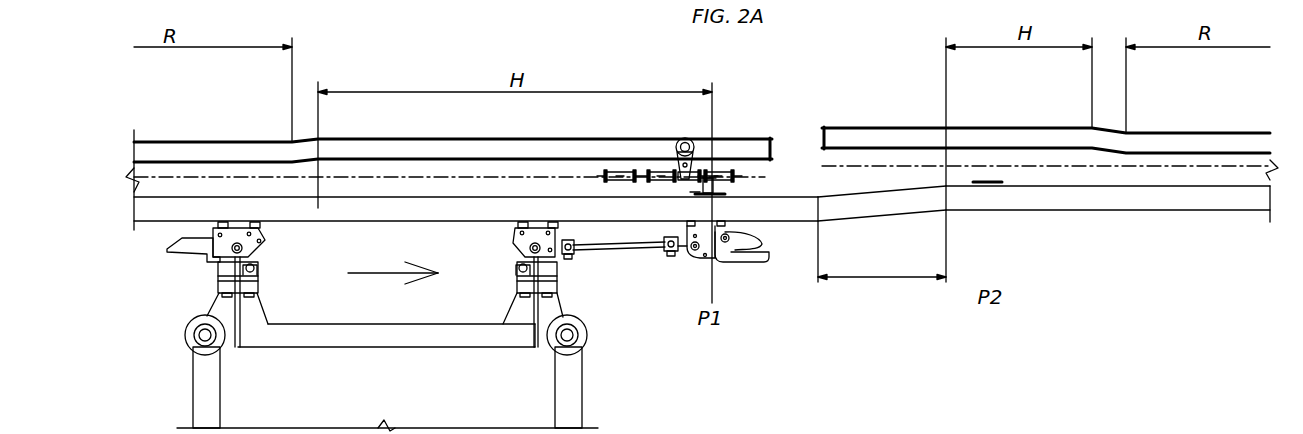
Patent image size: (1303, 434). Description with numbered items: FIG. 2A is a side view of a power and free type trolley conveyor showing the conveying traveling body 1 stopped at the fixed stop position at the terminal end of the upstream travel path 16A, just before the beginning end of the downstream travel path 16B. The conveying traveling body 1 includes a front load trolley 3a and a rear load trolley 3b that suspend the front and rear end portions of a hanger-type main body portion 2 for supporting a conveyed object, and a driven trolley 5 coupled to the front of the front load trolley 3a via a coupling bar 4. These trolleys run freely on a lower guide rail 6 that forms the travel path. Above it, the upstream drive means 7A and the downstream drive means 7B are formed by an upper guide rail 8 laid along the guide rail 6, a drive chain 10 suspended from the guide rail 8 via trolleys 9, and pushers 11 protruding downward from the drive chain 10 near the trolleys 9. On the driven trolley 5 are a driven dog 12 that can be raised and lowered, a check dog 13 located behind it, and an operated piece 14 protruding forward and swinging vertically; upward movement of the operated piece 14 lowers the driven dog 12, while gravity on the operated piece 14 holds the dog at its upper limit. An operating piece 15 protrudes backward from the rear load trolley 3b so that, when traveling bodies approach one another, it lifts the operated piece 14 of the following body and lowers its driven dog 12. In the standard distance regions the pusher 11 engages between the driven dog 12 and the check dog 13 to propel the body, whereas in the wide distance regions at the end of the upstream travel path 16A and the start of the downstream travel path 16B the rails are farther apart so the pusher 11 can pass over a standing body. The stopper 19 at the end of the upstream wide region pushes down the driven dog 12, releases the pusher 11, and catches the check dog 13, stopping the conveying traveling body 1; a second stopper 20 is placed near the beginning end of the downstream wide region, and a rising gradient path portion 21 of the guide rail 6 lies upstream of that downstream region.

The conveying traveling body 1 is at (591, 382).
The hanger-type main body portion 2 is at (455, 333).
The front load trolley 3a is at (530, 238).
The rear load trolley 3b is at (250, 240).
The coupling bar 4 is at (608, 248).
The driven trolley 5 is at (705, 235).
The guide rail 6 is at (385, 208).
The upstream drive means 7A is at (428, 133).
The downstream drive means 7B is at (1242, 128).
The guide rail 8 is at (510, 147).
The trolley 9 is at (682, 158).
The drive chain 10 is at (168, 180).
The pusher 11 is at (727, 192).
The driven dog 12 is at (717, 197).
The check dog 13 is at (692, 192).
The operated piece 14 is at (745, 267).
The operating piece 15 is at (188, 248).
The upstream travel path 16A is at (230, 190).
The downstream travel path 16B is at (1170, 180).
The stopper 19 is at (702, 172).
The stopper 20 is at (985, 178).
The rising gradient path portion 21 is at (882, 265).